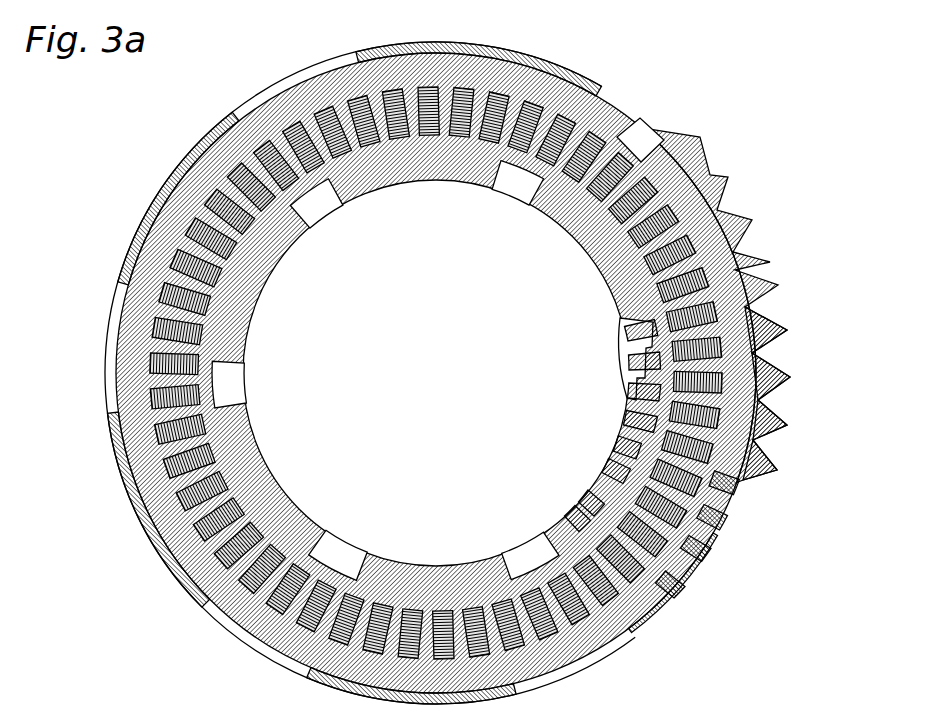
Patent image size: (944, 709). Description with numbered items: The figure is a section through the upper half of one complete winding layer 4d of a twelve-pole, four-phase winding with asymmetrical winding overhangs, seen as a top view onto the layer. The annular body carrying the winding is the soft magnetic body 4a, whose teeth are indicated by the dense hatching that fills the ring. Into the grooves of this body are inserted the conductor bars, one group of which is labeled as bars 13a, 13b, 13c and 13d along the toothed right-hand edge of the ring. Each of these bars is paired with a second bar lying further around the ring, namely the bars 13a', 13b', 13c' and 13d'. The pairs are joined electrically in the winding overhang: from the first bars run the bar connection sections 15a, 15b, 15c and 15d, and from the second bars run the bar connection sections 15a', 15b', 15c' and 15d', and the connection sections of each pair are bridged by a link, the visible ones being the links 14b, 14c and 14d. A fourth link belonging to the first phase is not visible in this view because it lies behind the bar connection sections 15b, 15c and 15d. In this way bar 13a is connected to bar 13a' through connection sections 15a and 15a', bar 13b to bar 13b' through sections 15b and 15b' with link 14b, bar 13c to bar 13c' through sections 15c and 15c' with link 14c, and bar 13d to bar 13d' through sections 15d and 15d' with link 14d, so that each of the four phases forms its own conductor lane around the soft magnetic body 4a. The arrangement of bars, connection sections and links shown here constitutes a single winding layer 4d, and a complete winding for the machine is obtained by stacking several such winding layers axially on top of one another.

The soft magnetic body 4a is at (636, 140).
The winding layer 4d is at (160, 181).
The bar 13a is at (803, 321).
The bar 13b is at (807, 371).
The bar 13c is at (806, 417).
The bar 13d is at (803, 460).
The bar 13a' is at (778, 489).
The bar 13b' is at (757, 529).
The bar 13c' is at (736, 566).
The bar 13d' is at (710, 602).
The link 14b is at (612, 450).
The link 14c is at (600, 470).
The link 14d is at (590, 483).
The bar connection section 15a is at (591, 327).
The bar connection section 15b is at (593, 355).
The bar connection section 15c is at (593, 383).
The bar connection section 15d is at (591, 411).
The bar connection section 15a' is at (521, 419).
The bar connection section 15b' is at (508, 453).
The bar connection section 15c' is at (490, 515).
The bar connection section 15d' is at (485, 528).